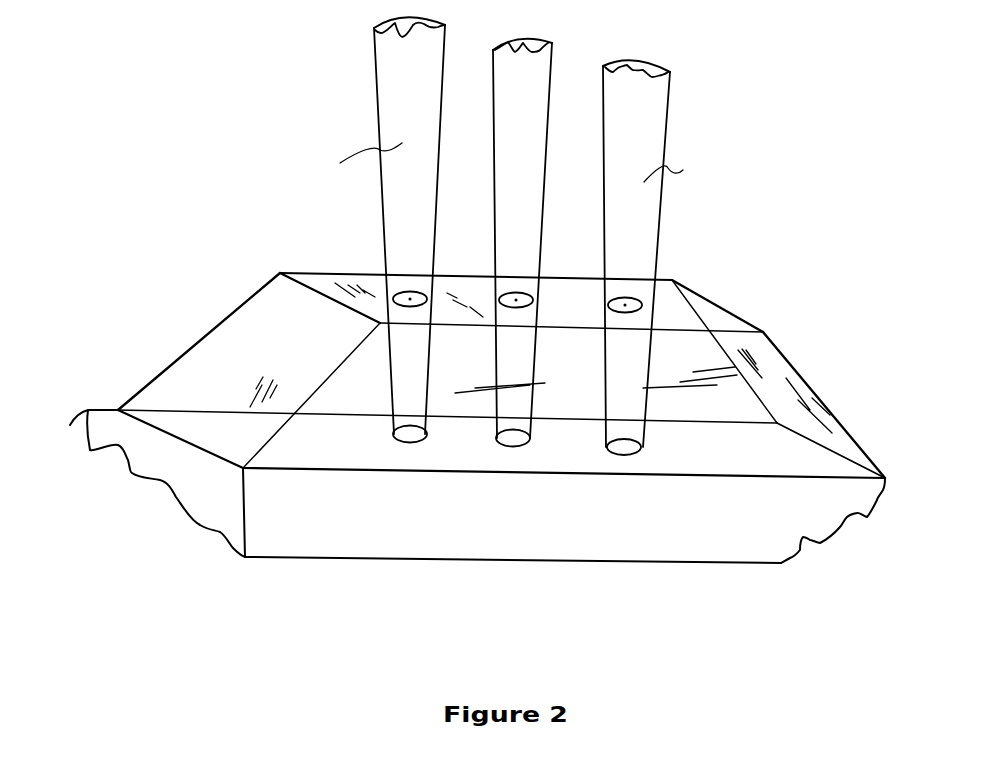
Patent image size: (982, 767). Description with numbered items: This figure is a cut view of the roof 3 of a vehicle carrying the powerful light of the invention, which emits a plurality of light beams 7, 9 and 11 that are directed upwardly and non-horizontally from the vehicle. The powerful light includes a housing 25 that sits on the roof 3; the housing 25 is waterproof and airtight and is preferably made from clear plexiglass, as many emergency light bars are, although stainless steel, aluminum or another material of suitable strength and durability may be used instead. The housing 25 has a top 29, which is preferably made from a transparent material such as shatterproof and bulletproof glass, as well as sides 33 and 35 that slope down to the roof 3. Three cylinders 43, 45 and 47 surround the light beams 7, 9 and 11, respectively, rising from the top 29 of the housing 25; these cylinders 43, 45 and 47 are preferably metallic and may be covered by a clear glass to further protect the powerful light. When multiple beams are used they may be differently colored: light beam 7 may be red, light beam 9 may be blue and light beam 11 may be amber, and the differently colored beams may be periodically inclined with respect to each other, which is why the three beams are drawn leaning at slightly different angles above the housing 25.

The roof 3 is at (333, 535).
The light beam 7 is at (397, 195).
The light beam 9 is at (526, 163).
The light beam 11 is at (651, 135).
The housing 25 is at (501, 333).
The top 29 is at (676, 320).
The side 33 is at (758, 363).
The side 35 is at (227, 347).
The cylinder 43 is at (392, 302).
The cylinder 45 is at (541, 293).
The cylinder 47 is at (674, 282).